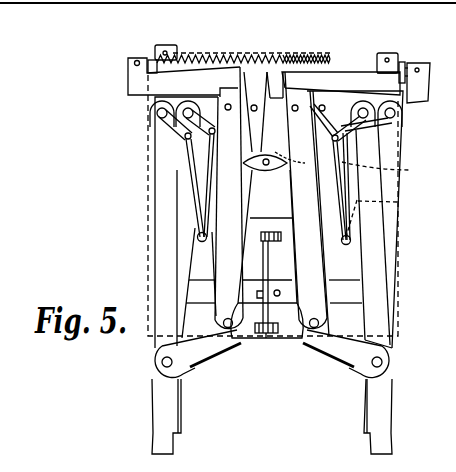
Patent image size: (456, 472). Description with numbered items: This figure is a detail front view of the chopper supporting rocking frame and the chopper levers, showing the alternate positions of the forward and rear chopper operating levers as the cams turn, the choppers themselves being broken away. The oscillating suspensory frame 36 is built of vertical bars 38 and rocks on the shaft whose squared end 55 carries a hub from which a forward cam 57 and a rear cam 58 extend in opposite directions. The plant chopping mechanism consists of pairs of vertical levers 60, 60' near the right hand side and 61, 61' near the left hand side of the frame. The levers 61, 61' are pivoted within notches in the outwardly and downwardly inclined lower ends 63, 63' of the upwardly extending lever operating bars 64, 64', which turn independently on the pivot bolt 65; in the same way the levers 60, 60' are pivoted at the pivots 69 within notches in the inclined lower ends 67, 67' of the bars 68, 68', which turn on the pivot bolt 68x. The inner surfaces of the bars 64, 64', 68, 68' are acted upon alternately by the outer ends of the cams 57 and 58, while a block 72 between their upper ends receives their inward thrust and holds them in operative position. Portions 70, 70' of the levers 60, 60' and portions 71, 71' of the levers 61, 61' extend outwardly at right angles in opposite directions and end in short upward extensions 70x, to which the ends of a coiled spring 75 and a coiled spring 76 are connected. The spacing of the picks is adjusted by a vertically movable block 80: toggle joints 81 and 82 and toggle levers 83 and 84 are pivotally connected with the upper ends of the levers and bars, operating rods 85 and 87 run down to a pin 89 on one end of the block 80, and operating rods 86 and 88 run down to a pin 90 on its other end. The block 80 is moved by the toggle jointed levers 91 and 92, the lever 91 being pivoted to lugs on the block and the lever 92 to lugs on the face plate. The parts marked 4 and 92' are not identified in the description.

The frame 4 is at (449, 122).
The oscillating suspensory frame 36 is at (443, 182).
The vertical bar 38 is at (429, 83).
The shaft end 55 is at (268, 158).
The cam 57 is at (252, 168).
The cam 58 is at (284, 173).
The vertical lever 60 is at (366, 219).
The vertical lever 60' is at (390, 160).
The vertical lever 61 is at (163, 222).
The vertical lever 61' is at (142, 257).
The inclined lower end 63 is at (196, 358).
The inclined lower end 63' is at (218, 363).
The lever operating bar 64 is at (229, 198).
The lever operating bar 64' is at (255, 112).
The pivot bolt 65 is at (222, 316).
The inclined lower end 67 is at (338, 357).
The inclined lower end 67' is at (328, 371).
The lever operating bar 68 is at (306, 200).
The lever operating bar 68' is at (325, 213).
The pivot bolt 68x is at (320, 318).
The pivot 69 is at (380, 364).
The outwardly extended portion 70 is at (341, 66).
The outwardly extended portion 70' is at (407, 56).
The upward extension 70x is at (388, 30).
The outwardly extended portion 71 is at (171, 88).
The outwardly extended portion 71' is at (266, 66).
The block 72 is at (272, 80).
The coiled spring 75 is at (196, 62).
The coiled spring 76 is at (231, 75).
The vertically movable block 80 is at (267, 254).
The toggle joint 81 is at (384, 124).
The toggle joint 82 is at (183, 131).
The toggle joint 83 is at (392, 120).
The toggle joint 84 is at (176, 122).
The operating rod 85 is at (362, 213).
The operating rod 86 is at (197, 192).
The operating rod 87 is at (397, 202).
The operating rod 88 is at (196, 222).
The pin 89 is at (351, 238).
The pin 90 is at (198, 241).
The toggle jointed lever 91 is at (268, 280).
The toggle jointed lever 92 is at (274, 321).
The lower gear shaft 92' is at (275, 347).